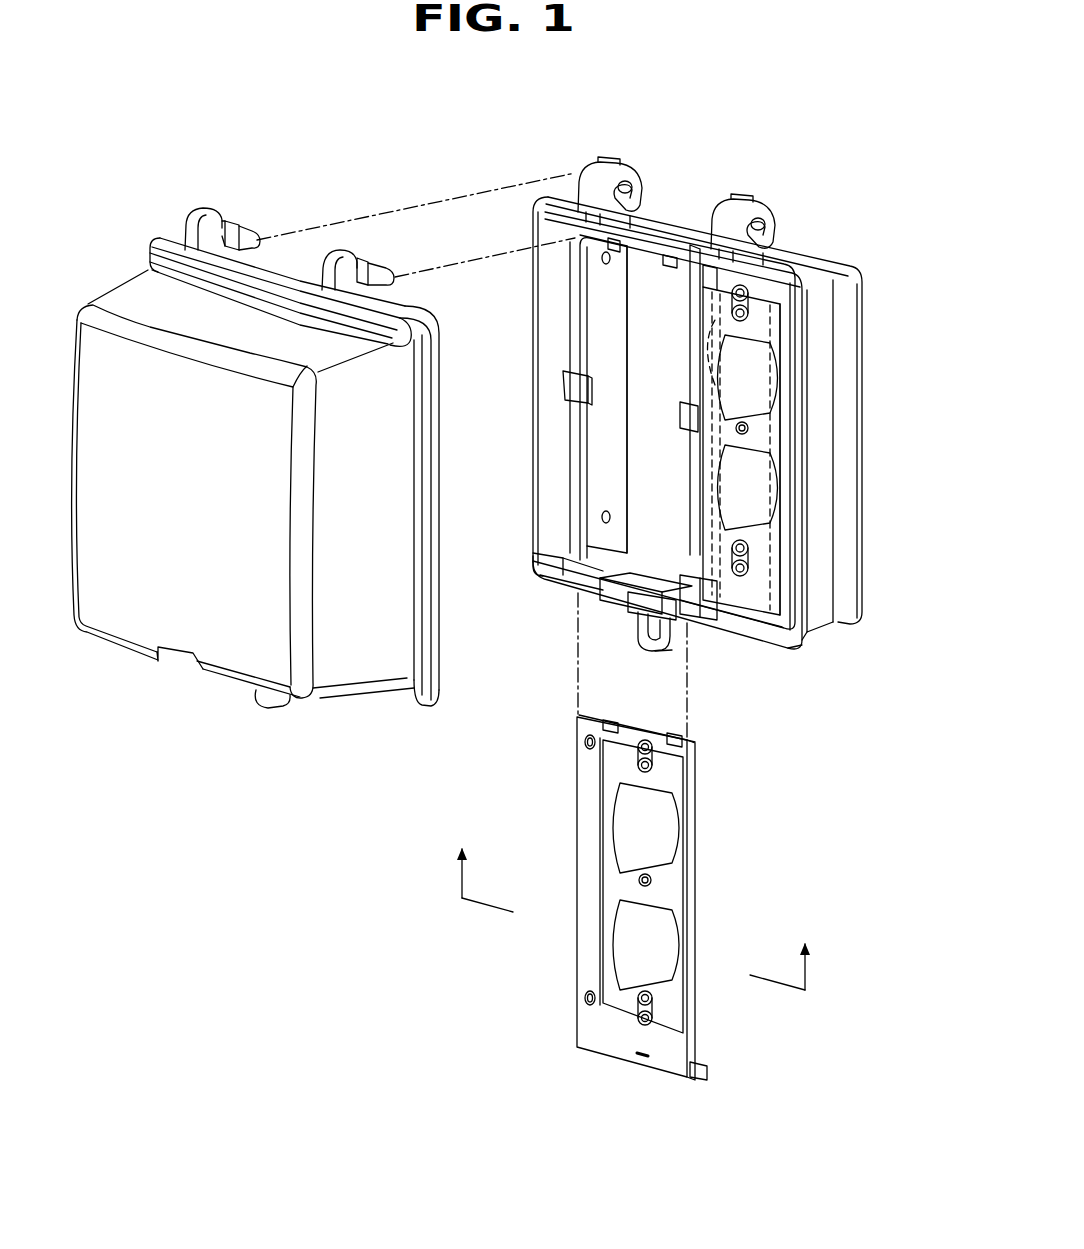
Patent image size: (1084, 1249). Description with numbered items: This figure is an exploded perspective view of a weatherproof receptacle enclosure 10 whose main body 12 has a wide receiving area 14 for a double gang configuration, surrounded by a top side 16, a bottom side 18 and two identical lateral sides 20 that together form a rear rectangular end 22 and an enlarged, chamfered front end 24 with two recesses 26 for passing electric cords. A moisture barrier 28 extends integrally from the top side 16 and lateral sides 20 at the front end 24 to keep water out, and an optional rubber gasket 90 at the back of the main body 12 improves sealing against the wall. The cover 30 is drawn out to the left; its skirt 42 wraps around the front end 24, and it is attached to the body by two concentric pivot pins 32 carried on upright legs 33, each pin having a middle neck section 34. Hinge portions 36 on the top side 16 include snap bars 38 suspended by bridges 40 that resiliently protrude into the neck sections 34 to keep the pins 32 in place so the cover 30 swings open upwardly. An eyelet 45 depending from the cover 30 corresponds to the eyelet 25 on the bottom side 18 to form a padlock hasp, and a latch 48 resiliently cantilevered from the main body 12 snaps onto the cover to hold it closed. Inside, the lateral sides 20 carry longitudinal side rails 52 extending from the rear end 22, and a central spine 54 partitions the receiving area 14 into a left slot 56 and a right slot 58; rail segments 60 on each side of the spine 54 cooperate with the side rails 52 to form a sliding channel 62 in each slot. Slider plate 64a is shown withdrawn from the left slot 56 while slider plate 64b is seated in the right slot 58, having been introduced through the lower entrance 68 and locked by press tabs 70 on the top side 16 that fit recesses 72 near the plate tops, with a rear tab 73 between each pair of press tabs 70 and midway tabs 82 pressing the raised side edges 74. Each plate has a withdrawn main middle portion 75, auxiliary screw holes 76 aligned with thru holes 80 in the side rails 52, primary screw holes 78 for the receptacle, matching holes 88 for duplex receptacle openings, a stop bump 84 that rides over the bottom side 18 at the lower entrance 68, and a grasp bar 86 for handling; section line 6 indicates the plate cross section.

The section line 6- 6 is at (633, 900).
The receptacle enclosure 10 is at (150, 180).
The main body 12 is at (507, 233).
The receiving area 14 is at (646, 340).
The top side 16 is at (802, 253).
The bottom side 18 is at (820, 633).
The lateral sides 20 is at (545, 408).
The rear rectangular end 22 is at (838, 518).
The front end 24 is at (795, 652).
The eyelet 25 is at (678, 655).
The recesses 26 is at (617, 592).
The moisture barrier 28 is at (787, 545).
The cover 30 is at (103, 297).
The pivot pins 32 is at (250, 228).
The upright legs 33 is at (205, 212).
The middle neck sections 34 is at (240, 226).
The hinge portions 36 is at (748, 197).
The snap bars 38 is at (583, 170).
The bridges 40 is at (607, 160).
The skirt 42 is at (440, 652).
The eyelet 45 is at (275, 708).
The latch 48 is at (650, 603).
The side rails 52 is at (630, 460).
The longitudinal spine 54 is at (692, 352).
The left slot 56 is at (648, 556).
The right slot 58 is at (733, 494).
The rail segments 60 is at (715, 385).
The sliding channel 62 is at (567, 465).
The slider plate 64a is at (693, 830).
The slider plate 64b is at (778, 422).
The lower entrance 68 is at (540, 563).
The press tabs 70 is at (668, 260).
The recesses 72 is at (612, 718).
The rear tab 73 is at (665, 268).
The side edges 74 is at (590, 822).
The main middle portion 75 is at (707, 888).
The auxiliary screw holes 76 is at (583, 740).
The primary screw holes 78 is at (646, 886).
The thru holes 80 is at (600, 262).
The midway tabs 82 is at (588, 395).
The stop bump 84 is at (640, 1060).
The grasp bars 86 is at (707, 1068).
The matching holes 88 is at (620, 853).
The rubber gasket 90 is at (850, 252).